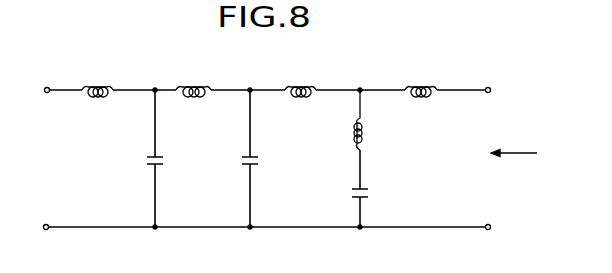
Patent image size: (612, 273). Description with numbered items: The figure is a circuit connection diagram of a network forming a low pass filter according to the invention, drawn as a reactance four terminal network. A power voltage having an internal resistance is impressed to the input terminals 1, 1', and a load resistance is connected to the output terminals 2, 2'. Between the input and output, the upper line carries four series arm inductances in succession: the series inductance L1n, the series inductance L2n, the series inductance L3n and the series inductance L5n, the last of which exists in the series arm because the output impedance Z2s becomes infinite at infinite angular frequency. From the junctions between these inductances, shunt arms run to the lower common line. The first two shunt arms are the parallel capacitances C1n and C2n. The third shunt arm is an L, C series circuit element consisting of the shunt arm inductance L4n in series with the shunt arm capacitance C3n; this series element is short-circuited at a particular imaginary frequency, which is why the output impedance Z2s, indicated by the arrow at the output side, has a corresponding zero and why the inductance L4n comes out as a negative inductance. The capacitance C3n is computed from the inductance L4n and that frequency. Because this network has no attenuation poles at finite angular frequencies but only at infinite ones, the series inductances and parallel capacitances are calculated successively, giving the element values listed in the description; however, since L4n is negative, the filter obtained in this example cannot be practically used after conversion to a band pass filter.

The input terminal 1 is at (38, 91).
The input terminal 1' is at (37, 228).
The output terminal 2 is at (496, 92).
The output terminal 2' is at (499, 230).
The series inductance L1n is at (97, 75).
The series inductance L2n is at (193, 75).
The series inductance L3n is at (300, 75).
The shunt arm inductance L4n is at (379, 120).
The series inductance L5n is at (420, 75).
The parallel capacitance C1n is at (174, 158).
The parallel capacitance C2n is at (268, 158).
The shunt arm capacitance C3n is at (378, 188).
The output impedance Z2s is at (529, 152).